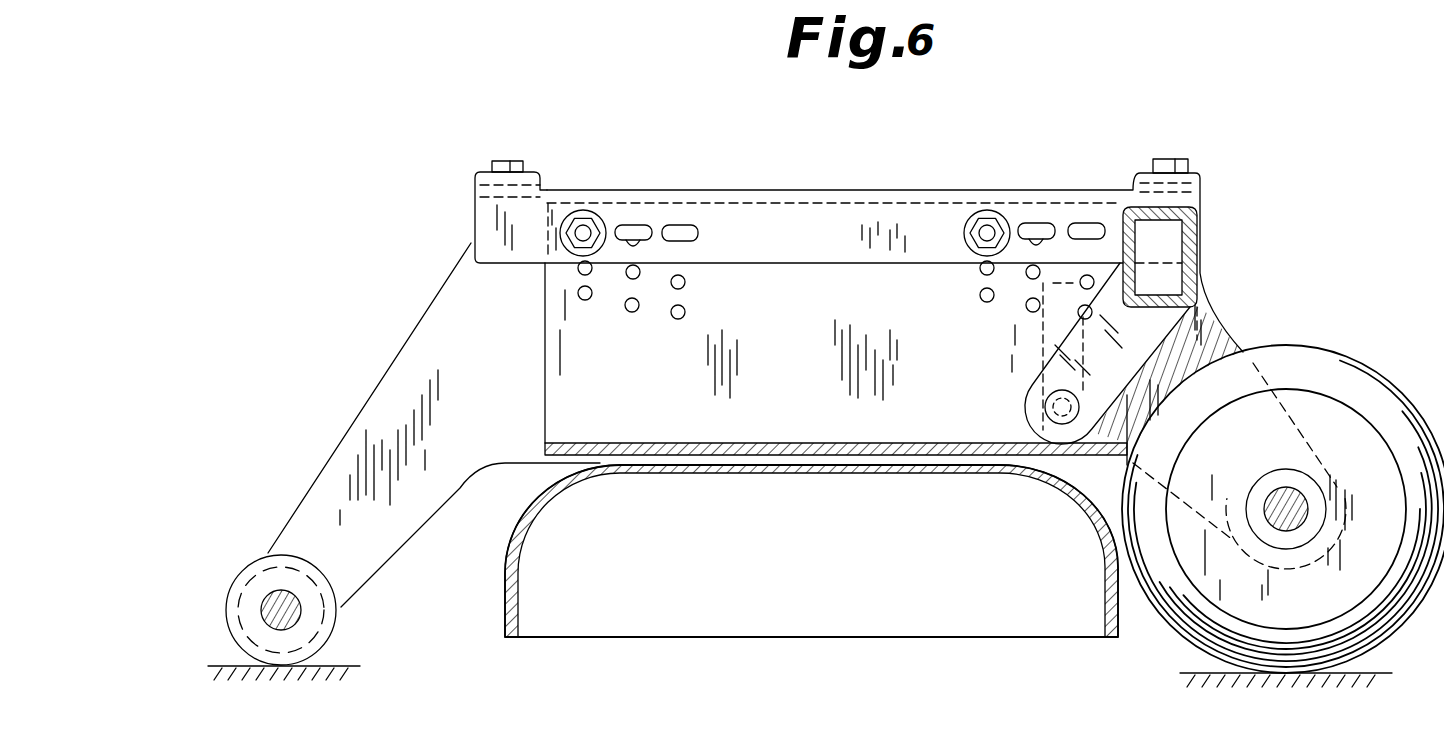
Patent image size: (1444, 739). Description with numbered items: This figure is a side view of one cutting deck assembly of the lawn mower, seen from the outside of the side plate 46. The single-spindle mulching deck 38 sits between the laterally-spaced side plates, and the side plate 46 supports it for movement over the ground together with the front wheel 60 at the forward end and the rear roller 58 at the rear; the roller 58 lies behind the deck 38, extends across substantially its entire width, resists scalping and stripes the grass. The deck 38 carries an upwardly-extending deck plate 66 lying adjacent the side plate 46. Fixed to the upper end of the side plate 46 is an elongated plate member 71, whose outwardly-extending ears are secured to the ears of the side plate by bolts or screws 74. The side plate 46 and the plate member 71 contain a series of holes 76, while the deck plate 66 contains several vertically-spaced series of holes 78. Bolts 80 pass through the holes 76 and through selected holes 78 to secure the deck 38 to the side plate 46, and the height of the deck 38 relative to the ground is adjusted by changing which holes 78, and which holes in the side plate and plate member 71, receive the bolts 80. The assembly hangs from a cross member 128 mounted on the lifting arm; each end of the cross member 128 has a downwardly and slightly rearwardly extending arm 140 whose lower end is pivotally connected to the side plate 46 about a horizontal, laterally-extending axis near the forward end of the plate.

The single-spindle mulching deck 38 is at (505, 597).
The side plate 46 is at (432, 322).
The rear roller 58 is at (236, 582).
The rear wheel 60 is at (1365, 371).
The deck plate 66 is at (558, 377).
The elongated plate member 71 is at (803, 243).
The bolts or screws 74 is at (508, 161).
The holes 76 is at (678, 225).
The holes 78 is at (685, 280).
The bolts 80 is at (583, 233).
The cross member 128 is at (1200, 238).
The arm 140 is at (1027, 397).